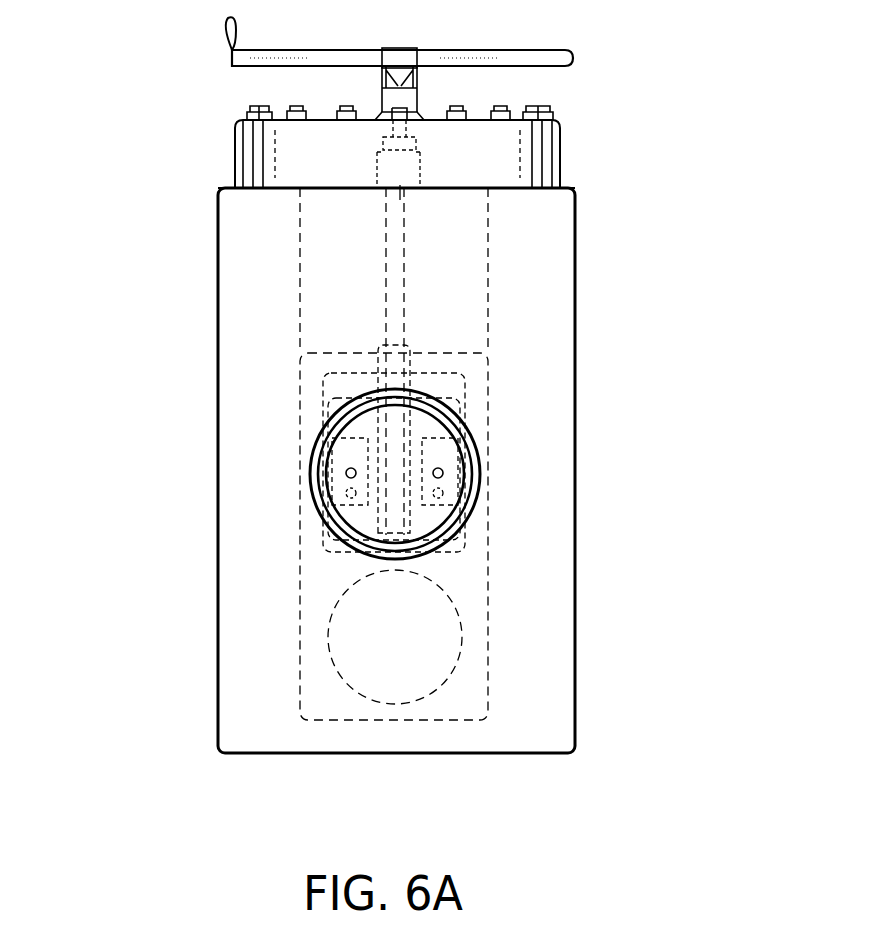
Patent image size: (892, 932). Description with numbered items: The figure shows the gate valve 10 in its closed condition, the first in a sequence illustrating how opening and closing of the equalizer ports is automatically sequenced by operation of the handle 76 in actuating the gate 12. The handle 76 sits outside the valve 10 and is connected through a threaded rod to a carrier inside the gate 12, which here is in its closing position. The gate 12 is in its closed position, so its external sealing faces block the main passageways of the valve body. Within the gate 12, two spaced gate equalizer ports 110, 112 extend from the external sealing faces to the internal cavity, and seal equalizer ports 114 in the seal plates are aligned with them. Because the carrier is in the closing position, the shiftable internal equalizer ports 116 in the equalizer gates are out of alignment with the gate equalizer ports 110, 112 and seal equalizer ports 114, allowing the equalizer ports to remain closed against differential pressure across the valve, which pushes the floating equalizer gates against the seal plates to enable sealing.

The gate valve 10 is at (240, 233).
The gate 12 is at (458, 707).
The handle 76 is at (538, 58).
The gate equalizer port 110 is at (444, 474).
The gate equalizer port 112 is at (346, 470).
The seal equalizer ports 114 is at (374, 433).
The internal equalizer port 116 is at (446, 495).